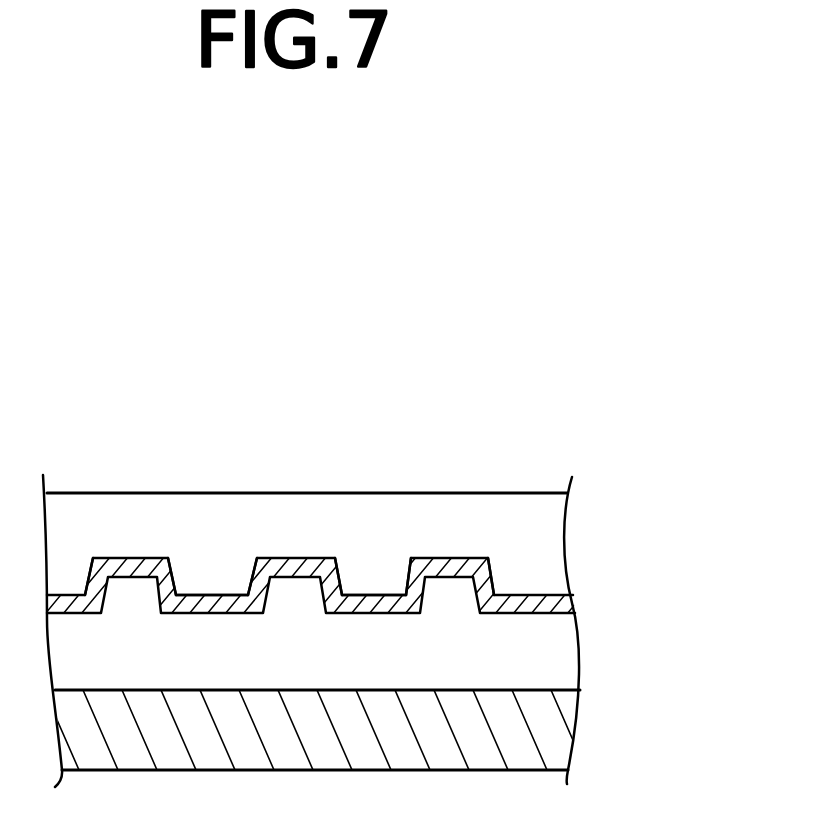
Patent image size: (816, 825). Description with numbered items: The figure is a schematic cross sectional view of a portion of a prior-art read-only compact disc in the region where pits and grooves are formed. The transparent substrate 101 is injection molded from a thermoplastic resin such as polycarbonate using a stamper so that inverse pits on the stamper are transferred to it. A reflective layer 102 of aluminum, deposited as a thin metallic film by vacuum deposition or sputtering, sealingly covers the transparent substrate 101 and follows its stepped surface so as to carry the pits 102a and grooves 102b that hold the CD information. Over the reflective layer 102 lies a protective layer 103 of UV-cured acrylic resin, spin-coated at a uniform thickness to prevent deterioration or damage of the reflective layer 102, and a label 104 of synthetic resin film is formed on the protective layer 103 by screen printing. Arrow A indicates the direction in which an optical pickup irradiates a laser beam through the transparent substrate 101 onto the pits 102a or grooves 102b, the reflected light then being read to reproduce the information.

The arrow A is at (299, 300).
The transparent substrate 101 is at (515, 513).
The reflective layer 102 is at (573, 603).
The pits 102a is at (132, 557).
The grooves 102b is at (213, 590).
The protective layer 103 is at (565, 659).
The label 104 is at (565, 727).